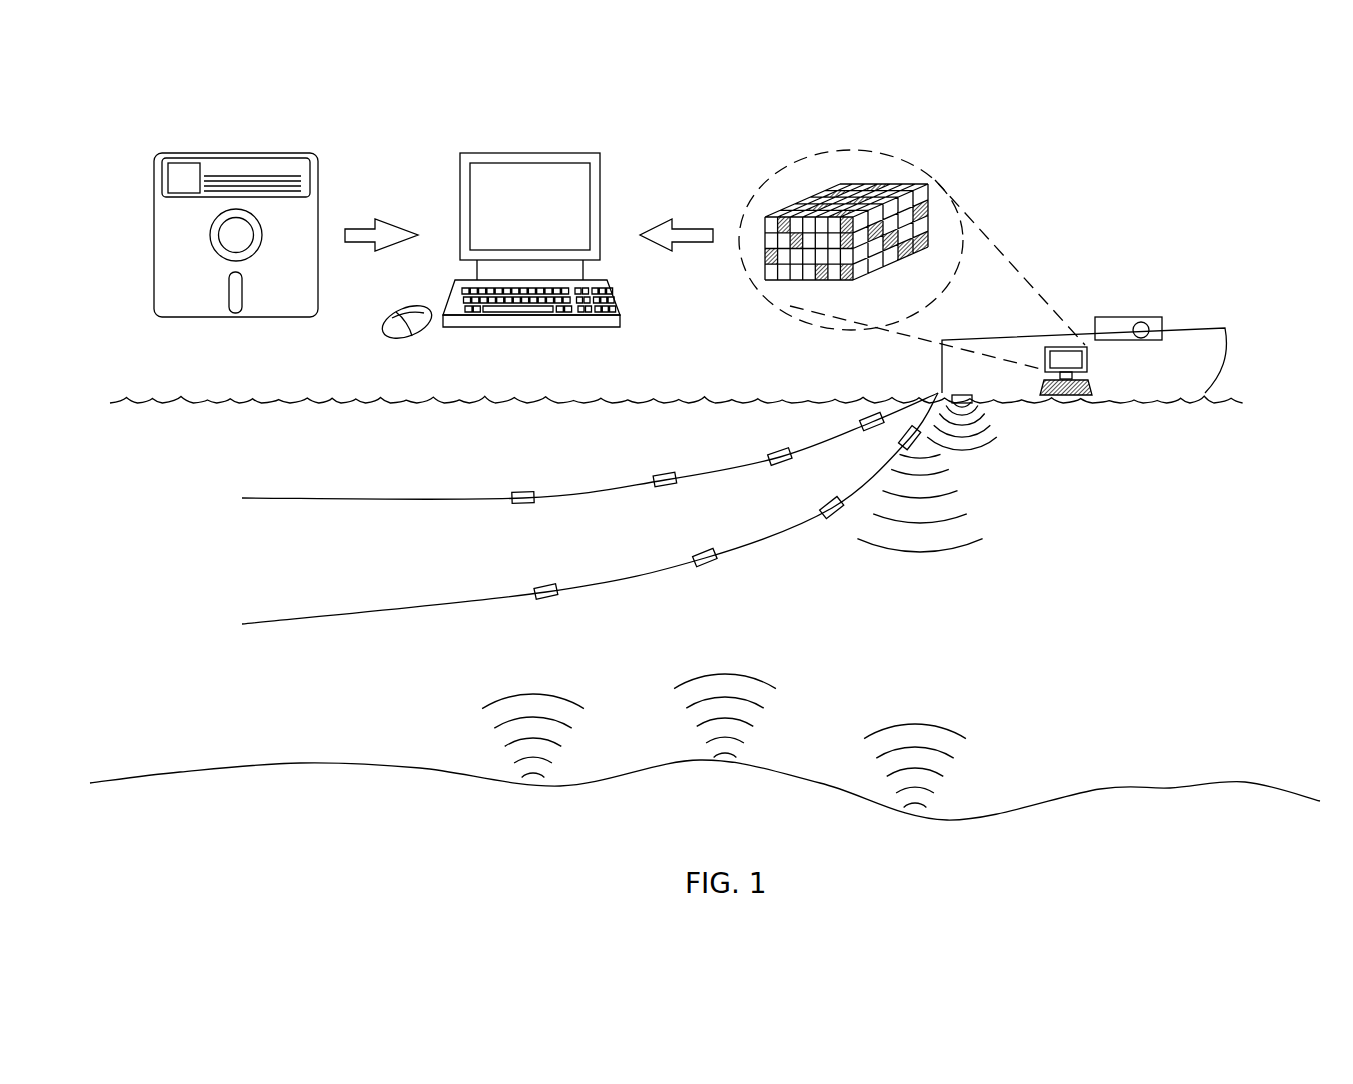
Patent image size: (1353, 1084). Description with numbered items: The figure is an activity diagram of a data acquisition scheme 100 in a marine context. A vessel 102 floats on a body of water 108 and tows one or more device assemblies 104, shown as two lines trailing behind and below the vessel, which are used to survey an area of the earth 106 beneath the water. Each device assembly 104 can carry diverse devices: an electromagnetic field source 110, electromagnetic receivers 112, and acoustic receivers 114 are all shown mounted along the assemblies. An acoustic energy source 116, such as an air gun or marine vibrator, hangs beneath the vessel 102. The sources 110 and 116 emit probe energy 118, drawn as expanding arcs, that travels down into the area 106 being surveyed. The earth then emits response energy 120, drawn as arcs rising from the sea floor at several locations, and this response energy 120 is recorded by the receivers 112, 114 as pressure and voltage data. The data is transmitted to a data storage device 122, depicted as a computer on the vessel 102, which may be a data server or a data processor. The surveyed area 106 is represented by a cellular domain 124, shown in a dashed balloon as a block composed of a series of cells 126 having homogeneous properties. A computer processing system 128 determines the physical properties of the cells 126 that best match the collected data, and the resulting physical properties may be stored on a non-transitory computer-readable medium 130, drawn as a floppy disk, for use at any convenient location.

The data acquisition scheme 100 is at (1072, 178).
The vessel 102 is at (1205, 330).
The device assemblies 104 is at (275, 497).
The area of the earth 106 is at (740, 825).
The body of water 108 is at (1092, 637).
The electromagnetic field source 110 is at (904, 437).
The electromagnetic receivers 112 is at (522, 492).
The acoustic receivers 114 is at (864, 418).
The acoustic energy source 116 is at (985, 399).
The probe energy 118 is at (990, 450).
The response energy 120 is at (519, 693).
The data storage device 122 is at (1088, 360).
The cellular domain 124 is at (880, 151).
The cells 126 is at (848, 272).
The computer processing system 128 is at (530, 153).
The non-transitory computer-readable medium 130 is at (154, 251).